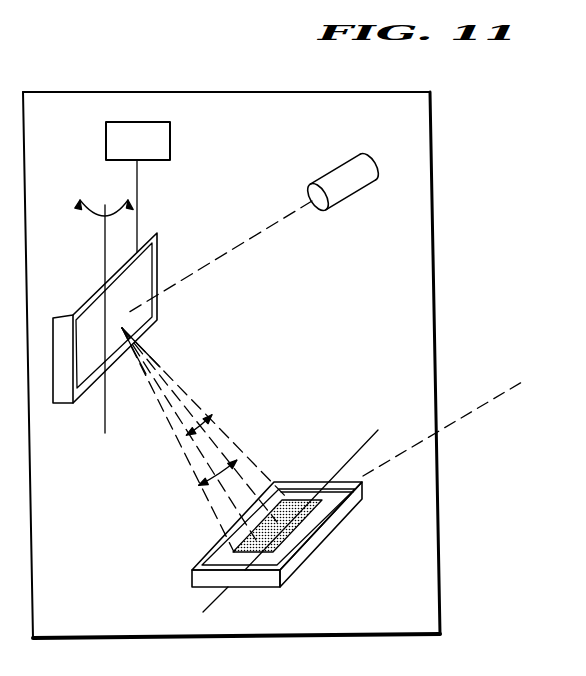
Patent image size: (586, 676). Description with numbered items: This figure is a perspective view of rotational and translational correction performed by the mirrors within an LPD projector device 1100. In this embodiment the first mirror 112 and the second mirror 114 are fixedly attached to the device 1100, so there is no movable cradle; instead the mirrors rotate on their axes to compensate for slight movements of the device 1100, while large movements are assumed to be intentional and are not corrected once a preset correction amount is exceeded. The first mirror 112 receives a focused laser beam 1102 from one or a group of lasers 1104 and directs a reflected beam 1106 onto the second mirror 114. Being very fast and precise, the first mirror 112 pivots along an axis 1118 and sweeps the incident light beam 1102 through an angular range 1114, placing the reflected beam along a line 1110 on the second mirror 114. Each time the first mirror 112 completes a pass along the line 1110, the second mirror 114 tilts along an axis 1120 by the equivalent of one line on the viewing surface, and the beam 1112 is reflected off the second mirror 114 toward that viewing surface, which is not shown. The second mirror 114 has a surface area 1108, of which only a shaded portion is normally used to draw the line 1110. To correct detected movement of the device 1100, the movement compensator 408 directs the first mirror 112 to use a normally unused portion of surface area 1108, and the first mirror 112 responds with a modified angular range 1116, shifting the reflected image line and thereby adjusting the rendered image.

The device 1100 is at (470, 219).
The movement compensator 408 is at (173, 137).
The axis 1118 is at (103, 242).
The first mirror 112 is at (60, 405).
The lasers 1104 is at (341, 168).
The focused laser beam 1102 is at (227, 253).
The reflected beam 1106 is at (182, 403).
The surface area 1108 is at (235, 435).
The line 1110 is at (270, 470).
The angular range 1114 is at (186, 440).
The modified angular range 1116 is at (201, 491).
The second mirror 114 is at (318, 537).
The axis 1120 is at (357, 450).
The beam 1112 is at (483, 405).